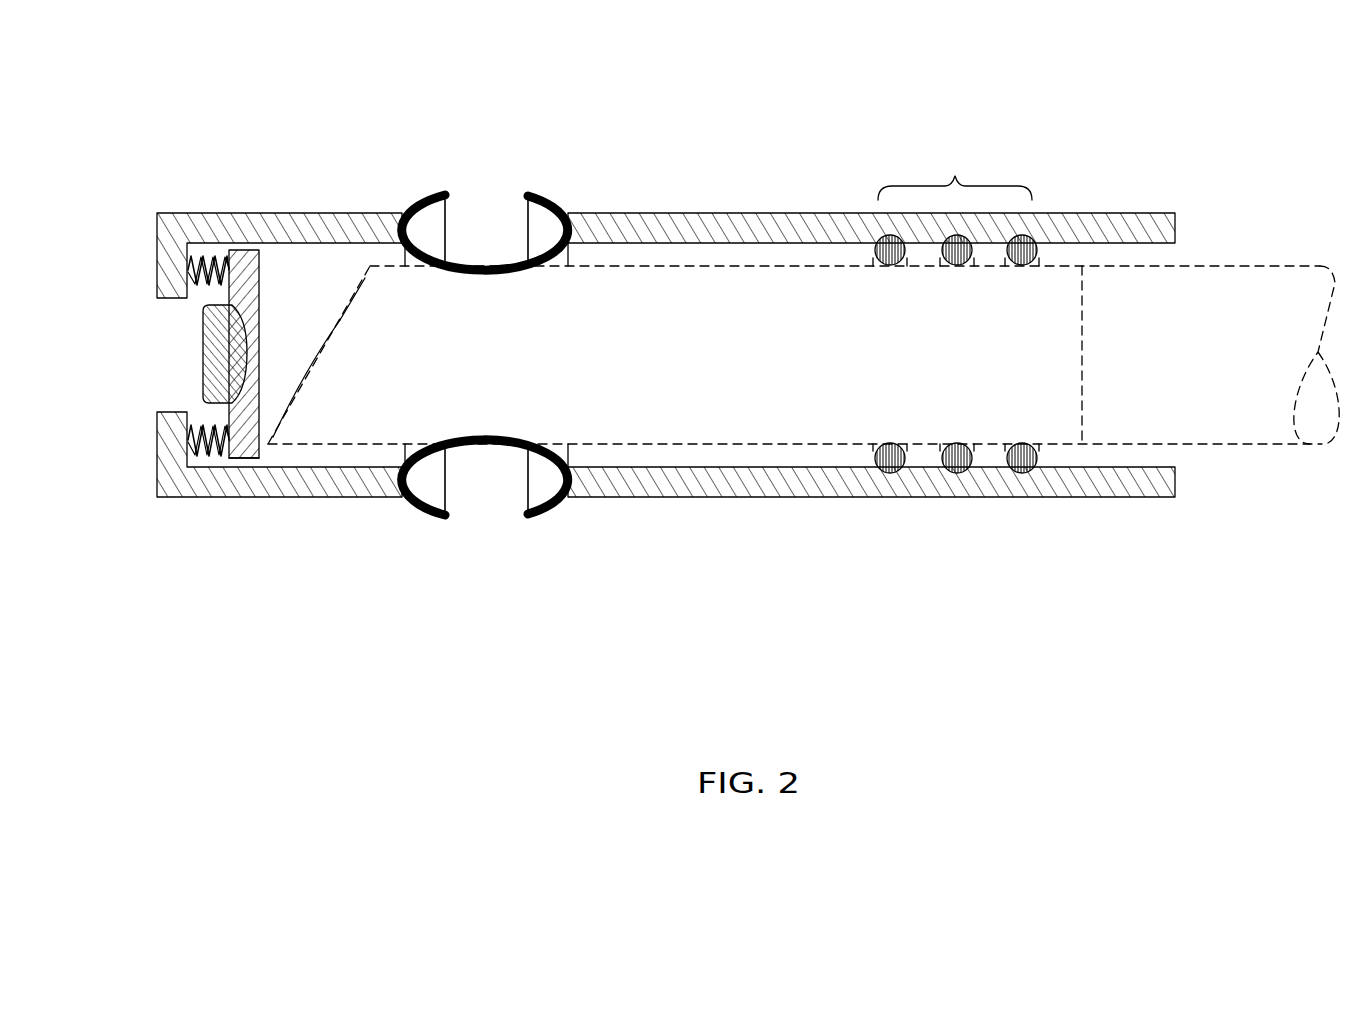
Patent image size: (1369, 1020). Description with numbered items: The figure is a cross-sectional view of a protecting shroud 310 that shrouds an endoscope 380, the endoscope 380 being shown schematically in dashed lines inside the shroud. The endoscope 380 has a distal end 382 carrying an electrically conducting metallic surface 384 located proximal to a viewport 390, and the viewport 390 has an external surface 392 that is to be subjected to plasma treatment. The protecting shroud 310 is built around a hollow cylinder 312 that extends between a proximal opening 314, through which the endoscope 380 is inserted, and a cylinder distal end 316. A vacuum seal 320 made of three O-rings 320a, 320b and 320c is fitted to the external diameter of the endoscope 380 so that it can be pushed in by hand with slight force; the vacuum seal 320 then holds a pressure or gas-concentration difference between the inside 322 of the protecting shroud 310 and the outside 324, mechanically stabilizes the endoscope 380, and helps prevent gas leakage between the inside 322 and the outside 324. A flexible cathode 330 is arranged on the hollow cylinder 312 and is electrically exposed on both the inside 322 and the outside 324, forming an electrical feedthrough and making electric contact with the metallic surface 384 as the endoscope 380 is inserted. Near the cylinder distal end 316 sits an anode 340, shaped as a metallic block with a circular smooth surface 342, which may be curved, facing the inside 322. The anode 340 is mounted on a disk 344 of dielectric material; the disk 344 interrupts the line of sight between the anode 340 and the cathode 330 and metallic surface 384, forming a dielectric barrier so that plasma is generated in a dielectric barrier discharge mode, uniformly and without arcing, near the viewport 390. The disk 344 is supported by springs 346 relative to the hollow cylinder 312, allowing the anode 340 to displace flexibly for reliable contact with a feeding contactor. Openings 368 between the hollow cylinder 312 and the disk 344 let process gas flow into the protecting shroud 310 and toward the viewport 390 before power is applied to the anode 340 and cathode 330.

The protecting shroud 310 is at (710, 497).
The hollow cylinder 312 is at (635, 497).
The proximal opening 314 is at (1157, 257).
The cylinder distal end 316 is at (180, 213).
The vacuum seal 320 is at (963, 386).
The O-ring 320a is at (895, 473).
The O-ring 320b is at (960, 473).
The O-ring 320c is at (1015, 473).
The inside 322 is at (285, 268).
The outside 324 is at (1233, 466).
The cathode 330 is at (492, 260).
The anode 340 is at (203, 333).
The circular smooth surface 342 is at (252, 350).
The disk 344 is at (263, 455).
The springs 346 is at (208, 448).
The openings 368 is at (212, 460).
The endoscope 380 is at (1290, 266).
The distal end 382 is at (283, 447).
The metallic surface 384 is at (668, 275).
The viewport 390 is at (323, 318).
The external surface 392 is at (348, 302).